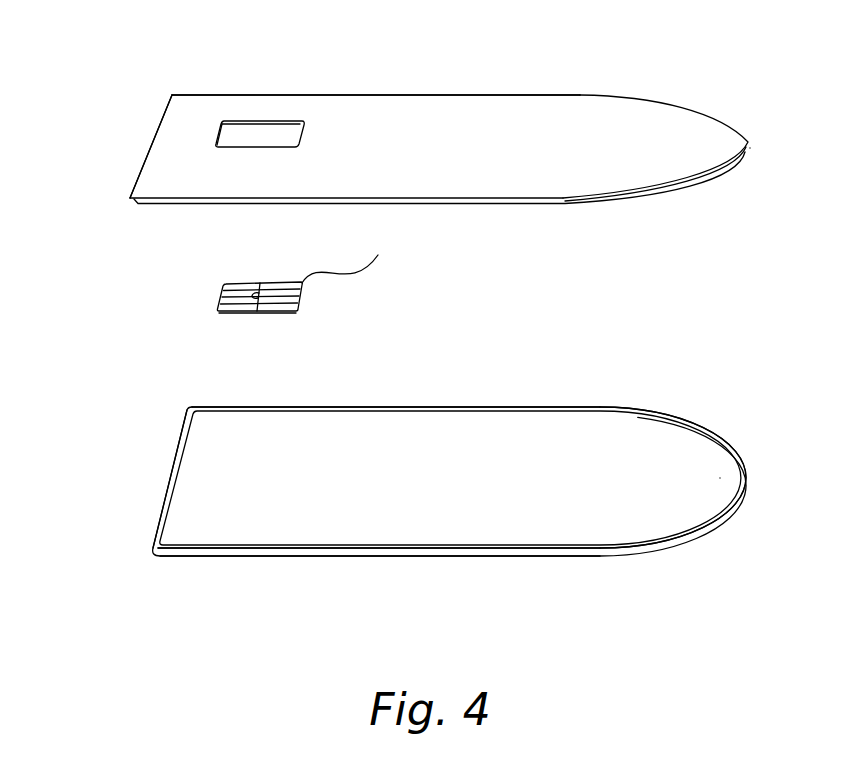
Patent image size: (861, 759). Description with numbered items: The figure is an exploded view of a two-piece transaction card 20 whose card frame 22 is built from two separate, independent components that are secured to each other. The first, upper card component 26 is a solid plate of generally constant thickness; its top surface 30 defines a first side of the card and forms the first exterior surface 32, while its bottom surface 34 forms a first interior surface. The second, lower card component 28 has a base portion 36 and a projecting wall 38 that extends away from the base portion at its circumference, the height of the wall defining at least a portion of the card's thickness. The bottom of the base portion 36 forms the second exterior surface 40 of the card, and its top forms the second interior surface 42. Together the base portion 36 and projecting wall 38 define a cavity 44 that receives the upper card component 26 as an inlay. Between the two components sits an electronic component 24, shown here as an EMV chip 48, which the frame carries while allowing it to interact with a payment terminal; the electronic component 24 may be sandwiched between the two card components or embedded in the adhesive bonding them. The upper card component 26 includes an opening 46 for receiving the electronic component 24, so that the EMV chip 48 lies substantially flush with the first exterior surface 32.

The transaction card 20 is at (100, 108).
The card frame 22 is at (720, 478).
The electronic component 24 is at (247, 282).
The upper card component 26 is at (633, 97).
The lower card component 28 is at (473, 557).
The top surface 30 is at (697, 127).
The first exterior surface 32 is at (382, 107).
The bottom surface 34 is at (530, 205).
The base portion 36 is at (307, 528).
The projecting wall 38 is at (578, 410).
The second exterior surface 40 is at (668, 547).
The second interior surface 42 is at (187, 512).
The cavity 44 is at (562, 528).
The opening 46 is at (262, 133).
The EMV chip 48 is at (346, 260).